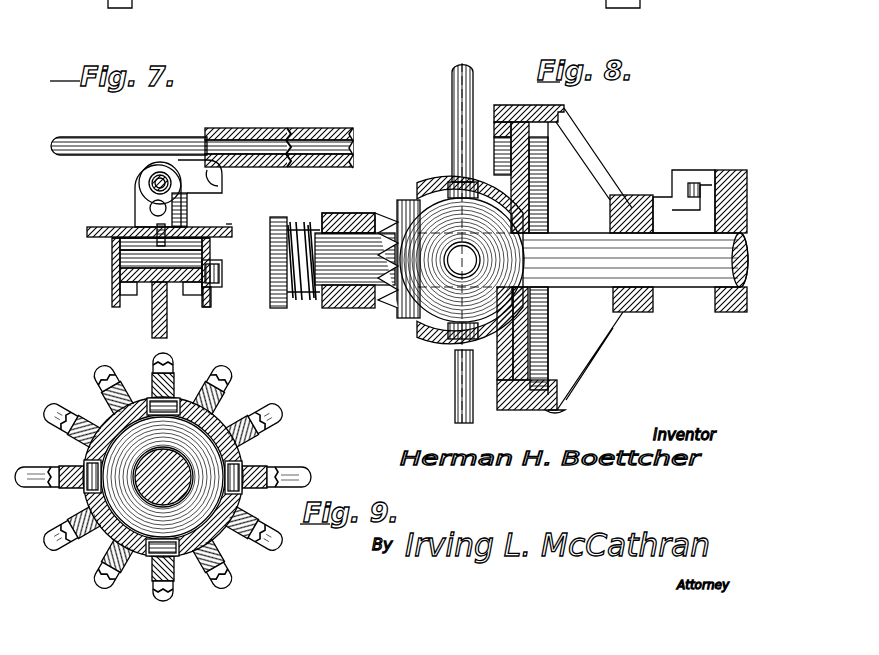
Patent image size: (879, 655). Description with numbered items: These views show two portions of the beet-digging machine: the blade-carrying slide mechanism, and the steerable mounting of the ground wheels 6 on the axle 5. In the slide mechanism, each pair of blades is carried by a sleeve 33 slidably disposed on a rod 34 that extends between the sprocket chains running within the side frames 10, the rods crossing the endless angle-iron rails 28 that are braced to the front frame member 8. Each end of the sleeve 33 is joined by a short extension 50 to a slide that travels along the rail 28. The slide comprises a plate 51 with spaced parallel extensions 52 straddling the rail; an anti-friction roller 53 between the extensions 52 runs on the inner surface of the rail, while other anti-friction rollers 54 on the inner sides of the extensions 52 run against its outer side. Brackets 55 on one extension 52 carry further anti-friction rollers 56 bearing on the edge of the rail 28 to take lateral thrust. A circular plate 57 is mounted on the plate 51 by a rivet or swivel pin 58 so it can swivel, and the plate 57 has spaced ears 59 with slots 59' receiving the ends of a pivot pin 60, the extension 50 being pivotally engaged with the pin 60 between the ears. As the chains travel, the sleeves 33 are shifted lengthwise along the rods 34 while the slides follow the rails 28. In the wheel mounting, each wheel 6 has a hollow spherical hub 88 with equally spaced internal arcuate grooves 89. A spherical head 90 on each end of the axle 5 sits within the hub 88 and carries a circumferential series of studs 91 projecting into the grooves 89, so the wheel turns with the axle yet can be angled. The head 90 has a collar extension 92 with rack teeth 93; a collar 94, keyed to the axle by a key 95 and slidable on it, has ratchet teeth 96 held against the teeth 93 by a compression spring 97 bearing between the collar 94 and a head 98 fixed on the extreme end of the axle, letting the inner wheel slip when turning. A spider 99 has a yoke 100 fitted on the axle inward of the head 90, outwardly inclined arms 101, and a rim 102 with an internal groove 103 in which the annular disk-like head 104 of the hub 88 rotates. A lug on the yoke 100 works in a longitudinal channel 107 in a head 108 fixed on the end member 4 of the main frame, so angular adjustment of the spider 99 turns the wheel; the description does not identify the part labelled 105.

In FIG. 8, the end member 4 is at (728, 313).
In FIG. 8, the axle 5 is at (582, 288).
In FIG. 9, the axle 5 is at (163, 457).
In FIG. 8, the ground wheel 6 is at (474, 68).
In FIG. 9, the ground wheel 6 is at (37, 392).
In FIG. 8, the front frame member 8 is at (462, 63).
In FIG. 8, the side frame 10 is at (610, 175).
In FIG. 7, the rail 28 is at (148, 312).
In FIG. 7, the sleeve 33 is at (268, 131).
In FIG. 7, the rod 34 is at (78, 141).
In FIG. 7, the extension 50 is at (219, 180).
In FIG. 7, the slide plate 51 is at (122, 228).
In FIG. 7, the parallel extension 52 is at (112, 266).
In FIG. 7, the anti-friction roller 53 is at (120, 257).
In FIG. 7, the anti-friction roller 54 is at (125, 293).
In FIG. 7, the bracket 55 is at (214, 292).
In FIG. 7, the anti-friction roller 56 is at (224, 275).
In FIG. 7, the circular plate 57 is at (234, 225).
In FIG. 7, the swivel pin 58 is at (137, 214).
In FIG. 7, the ear 59 is at (184, 142).
In FIG. 7, the slot 59' is at (188, 211).
In FIG. 7, the pivot pin 60 is at (158, 178).
In FIG. 8, the hub 88 is at (430, 352).
In FIG. 9, the hub 88 is at (240, 400).
In FIG. 8, the arcuate groove 89 is at (488, 360).
In FIG. 9, the arcuate groove 89 is at (245, 450).
In FIG. 8, the spherical head 90 is at (508, 208).
In FIG. 9, the spherical head 90 is at (112, 545).
In FIG. 8, the stud 91 is at (478, 260).
In FIG. 9, the stud 91 is at (218, 548).
In FIG. 8, the collar extension 92 is at (410, 300).
In FIG. 8, the rack teeth 93 is at (364, 305).
In FIG. 8, the collar 94 is at (333, 308).
In FIG. 8, the key 95 is at (340, 215).
In FIG. 8, the ratchet teeth 96 is at (370, 215).
In FIG. 8, the compression spring 97 is at (304, 222).
In FIG. 8, the head 98 is at (280, 308).
In FIG. 8, the spider 99 is at (612, 170).
In FIG. 8, the yoke 100 is at (653, 310).
In FIG. 8, the arm 101 is at (616, 343).
In FIG. 8, the rim 102 is at (575, 412).
In FIG. 8, the groove 103 is at (545, 412).
In FIG. 8, the annular disk-like head 104 is at (526, 120).
In FIG. 8, the bracket 105 is at (660, 182).
In FIG. 8, the longitudinal channel 107 is at (697, 182).
In FIG. 8, the head 108 is at (699, 233).